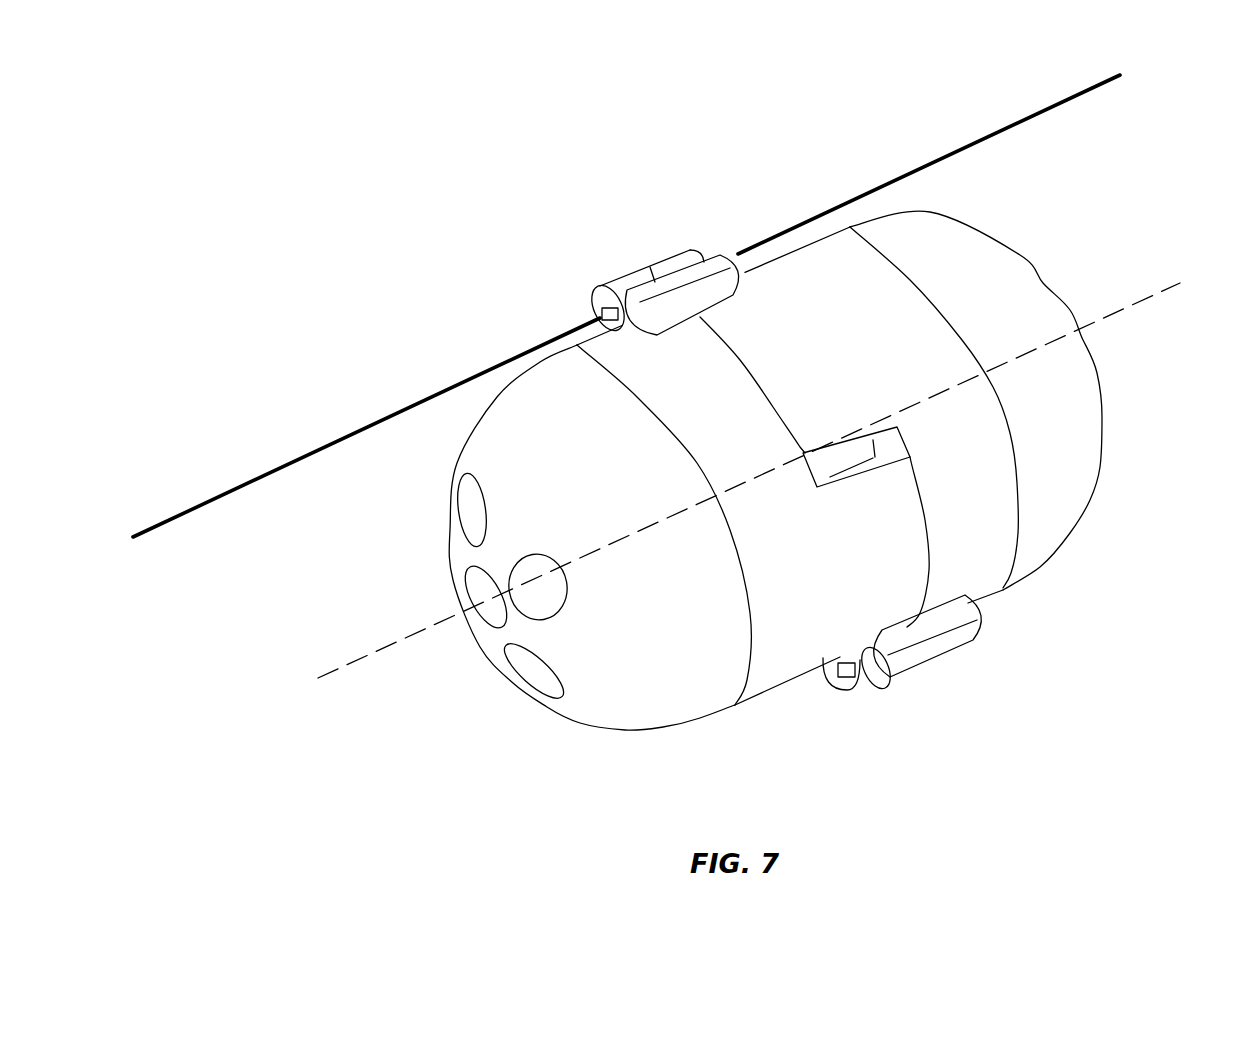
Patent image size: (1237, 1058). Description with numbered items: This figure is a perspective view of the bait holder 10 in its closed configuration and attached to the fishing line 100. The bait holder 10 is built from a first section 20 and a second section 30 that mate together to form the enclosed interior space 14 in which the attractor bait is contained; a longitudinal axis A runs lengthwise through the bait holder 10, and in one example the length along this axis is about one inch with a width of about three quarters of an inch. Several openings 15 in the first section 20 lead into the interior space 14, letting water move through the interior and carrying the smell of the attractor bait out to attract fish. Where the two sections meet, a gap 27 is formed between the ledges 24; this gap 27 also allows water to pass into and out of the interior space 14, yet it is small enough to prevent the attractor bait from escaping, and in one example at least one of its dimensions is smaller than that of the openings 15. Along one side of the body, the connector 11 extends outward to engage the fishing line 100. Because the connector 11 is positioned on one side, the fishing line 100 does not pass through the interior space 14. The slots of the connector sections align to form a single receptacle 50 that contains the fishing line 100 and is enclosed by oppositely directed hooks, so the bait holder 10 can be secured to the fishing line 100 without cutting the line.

The bait holder 10 is at (662, 174).
The connector 11 is at (628, 277).
The interior space 14 is at (922, 446).
The openings 15 is at (530, 672).
The first section 20 is at (662, 692).
The ledges 24 is at (837, 452).
The gap 27 is at (850, 460).
The second section 30 is at (1055, 495).
The receptacle 50 is at (596, 311).
The fishing line 100 is at (293, 458).
The longitudinal axis A is at (1133, 305).